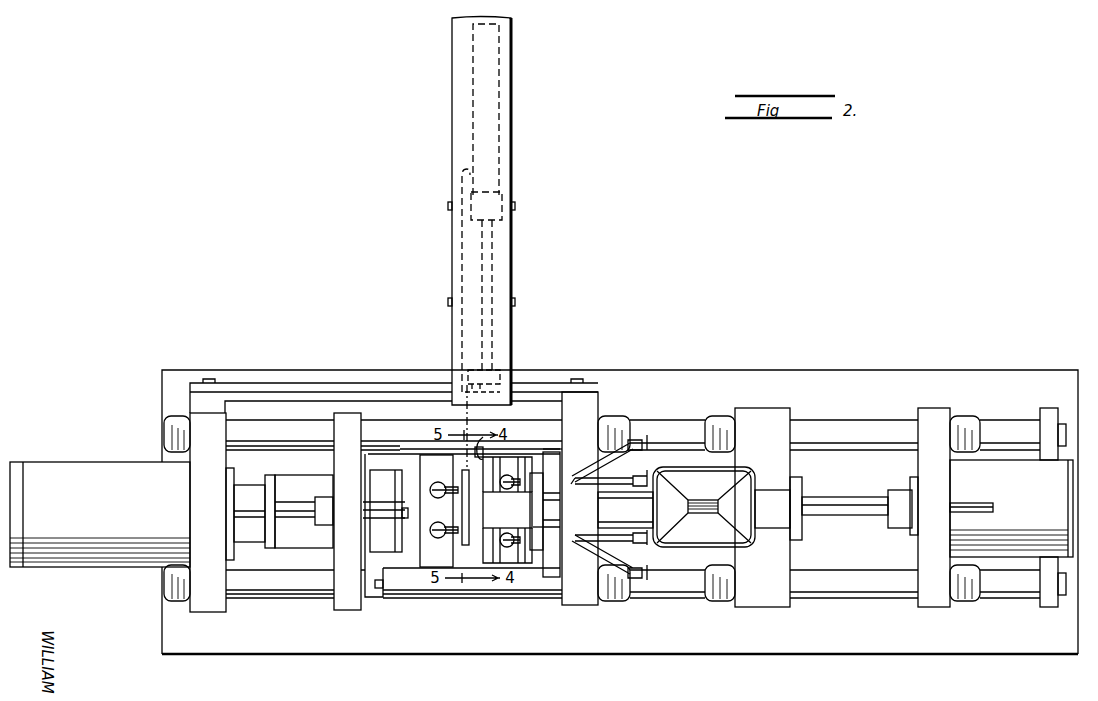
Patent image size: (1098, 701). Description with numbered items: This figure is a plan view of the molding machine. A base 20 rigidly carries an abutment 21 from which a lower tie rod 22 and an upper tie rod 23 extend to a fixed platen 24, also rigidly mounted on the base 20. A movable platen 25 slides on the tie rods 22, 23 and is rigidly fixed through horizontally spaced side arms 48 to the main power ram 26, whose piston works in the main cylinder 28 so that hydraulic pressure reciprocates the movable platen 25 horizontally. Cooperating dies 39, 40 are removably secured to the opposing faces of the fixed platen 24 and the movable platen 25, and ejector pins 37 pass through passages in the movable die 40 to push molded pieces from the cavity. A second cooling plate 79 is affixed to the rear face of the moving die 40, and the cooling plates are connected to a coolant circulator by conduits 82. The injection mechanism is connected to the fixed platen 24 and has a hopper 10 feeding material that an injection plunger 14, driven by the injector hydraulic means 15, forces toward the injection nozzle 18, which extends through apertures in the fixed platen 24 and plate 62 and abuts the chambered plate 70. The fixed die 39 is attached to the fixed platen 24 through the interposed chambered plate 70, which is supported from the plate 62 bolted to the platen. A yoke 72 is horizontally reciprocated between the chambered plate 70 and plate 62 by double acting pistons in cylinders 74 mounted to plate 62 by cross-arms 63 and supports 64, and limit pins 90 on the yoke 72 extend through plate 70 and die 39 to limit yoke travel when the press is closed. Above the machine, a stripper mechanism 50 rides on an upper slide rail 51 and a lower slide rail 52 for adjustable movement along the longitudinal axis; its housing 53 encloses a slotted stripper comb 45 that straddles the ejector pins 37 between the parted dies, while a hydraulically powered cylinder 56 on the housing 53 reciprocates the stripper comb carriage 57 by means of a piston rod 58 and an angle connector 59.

The hopper 10 is at (721, 460).
The injection plunger 14 is at (891, 504).
The injector hydraulic means 15 is at (996, 486).
The injection nozzle 18 is at (553, 500).
The base 20 is at (620, 484).
The abutment 21 is at (208, 463).
The lower tie rod 22 is at (620, 655).
The upper tie rod 23 is at (393, 377).
The fixed platen 24 is at (592, 539).
The movable platen 25 is at (347, 464).
The main power ram 26 is at (245, 493).
The main cylinder 28 is at (100, 478).
The ejector pins 37 is at (468, 503).
The fixed die 39 is at (507, 545).
The movable die 40 is at (462, 562).
The stripper comb 45 is at (438, 544).
The side arms 48 is at (299, 525).
The stripper mechanism 50 is at (516, 130).
The upper slide rail 51 is at (394, 351).
The lower slide rail 52 is at (394, 368).
The housing 53 is at (517, 206).
The hydraulically powered cylinder 56 is at (506, 88).
The stripper comb carriage 57 is at (448, 303).
The piston rod 58 is at (490, 275).
The angle connector 59 is at (496, 362).
The plate 62 is at (565, 513).
The cross-arms 63 is at (536, 486).
The supports 64 is at (560, 448).
The chambered plate 70 is at (507, 541).
The yoke 72 is at (560, 520).
The cylinders 74 is at (496, 515).
The second cooling plate 79 is at (384, 554).
The conduits 82 is at (641, 462).
The limit pins 90 is at (507, 427).